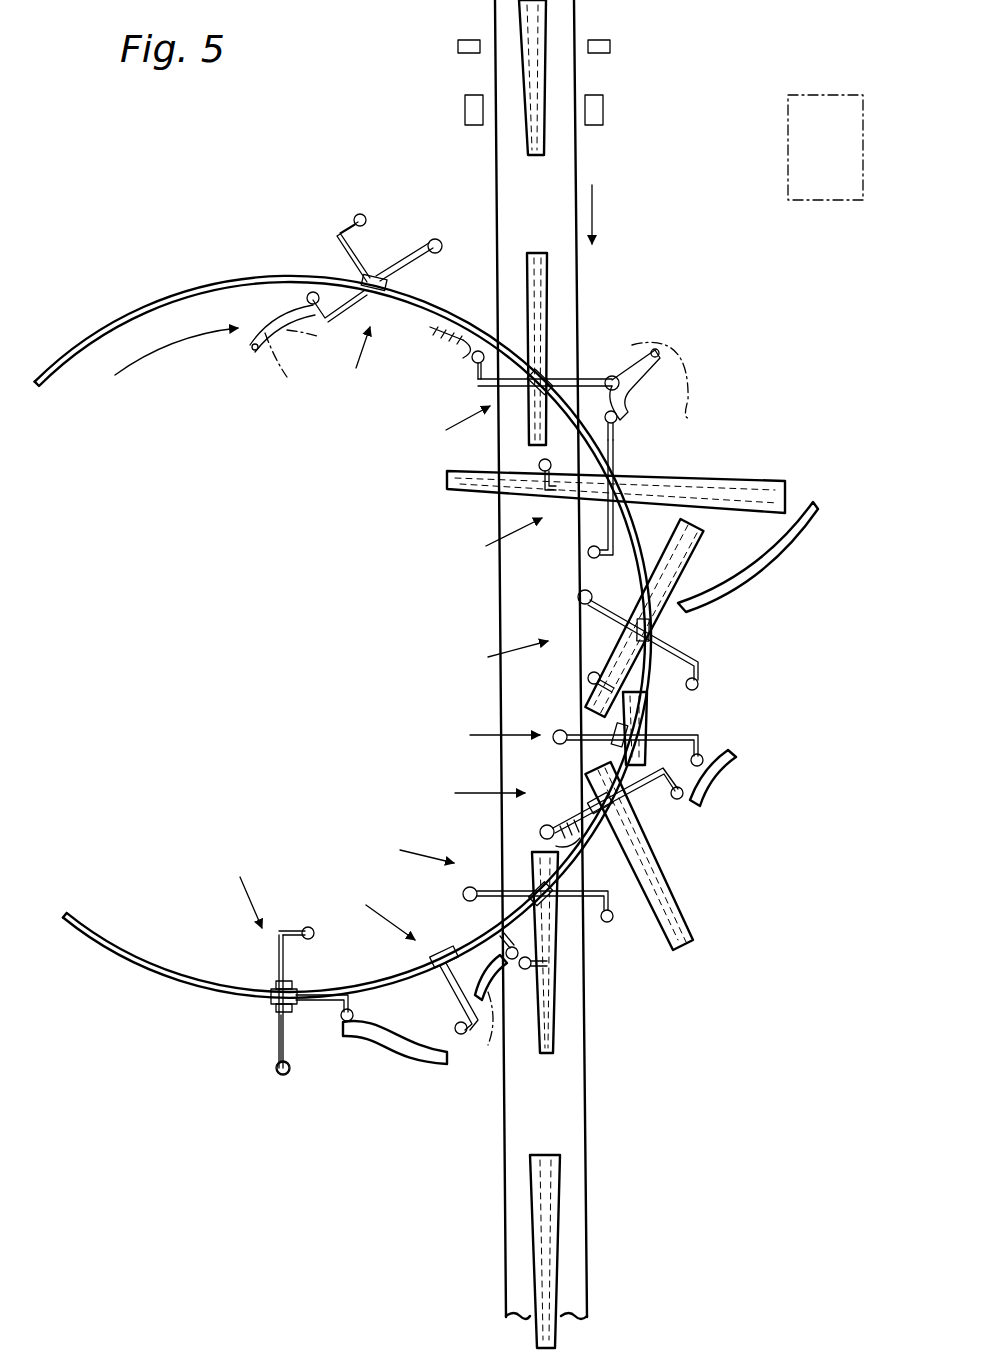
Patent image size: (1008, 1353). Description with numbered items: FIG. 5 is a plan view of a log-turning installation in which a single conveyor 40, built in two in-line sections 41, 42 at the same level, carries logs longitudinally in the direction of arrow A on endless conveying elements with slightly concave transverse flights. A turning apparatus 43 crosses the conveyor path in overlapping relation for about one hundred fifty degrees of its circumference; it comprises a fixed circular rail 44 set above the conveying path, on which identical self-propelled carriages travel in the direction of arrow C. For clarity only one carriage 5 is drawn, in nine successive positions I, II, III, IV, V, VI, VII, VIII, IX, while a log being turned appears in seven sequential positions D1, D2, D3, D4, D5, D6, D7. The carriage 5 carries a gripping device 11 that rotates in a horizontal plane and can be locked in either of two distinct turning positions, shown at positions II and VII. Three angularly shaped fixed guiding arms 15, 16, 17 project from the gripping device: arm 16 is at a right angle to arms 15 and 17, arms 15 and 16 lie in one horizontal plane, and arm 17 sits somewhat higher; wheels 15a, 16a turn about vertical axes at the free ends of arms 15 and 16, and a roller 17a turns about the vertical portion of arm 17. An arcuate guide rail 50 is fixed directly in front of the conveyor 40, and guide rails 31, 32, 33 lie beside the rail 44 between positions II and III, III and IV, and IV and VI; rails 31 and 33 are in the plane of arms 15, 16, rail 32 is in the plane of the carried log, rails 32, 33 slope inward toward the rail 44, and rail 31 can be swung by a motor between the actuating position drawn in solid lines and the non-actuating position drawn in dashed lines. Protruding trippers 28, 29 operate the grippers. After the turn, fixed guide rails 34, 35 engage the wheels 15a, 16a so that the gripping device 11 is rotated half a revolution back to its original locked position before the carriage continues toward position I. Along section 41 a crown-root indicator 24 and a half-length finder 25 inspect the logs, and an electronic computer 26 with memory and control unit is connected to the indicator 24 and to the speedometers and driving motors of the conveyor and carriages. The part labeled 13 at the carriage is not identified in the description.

The carriage 5 is at (381, 274).
The gripping device 11 is at (528, 400).
The slider block 13 is at (366, 282).
The guiding arm 15 is at (279, 964).
The wheel 15a is at (314, 938).
The guiding arm 16 is at (333, 1006).
The wheel 16a is at (356, 1018).
The guiding arm 17 is at (278, 1045).
The roller 17a is at (279, 1074).
The crown-root indicator 24 is at (456, 47).
The half-length finder 25 is at (470, 108).
The electronic computer 26 is at (788, 156).
The tripper 28 is at (462, 352).
The tripper 29 is at (558, 852).
The guide rail 31 is at (647, 372).
The guide rail 32 is at (727, 556).
The guide rail 33 is at (718, 776).
The guide rail 34 is at (482, 1012).
The guide rail 35 is at (405, 1060).
The conveyor 40 is at (483, 177).
The conveyor section 41 is at (588, 272).
The conveyor section 42 is at (590, 1250).
The turning apparatus 43 is at (314, 622).
The circular rail 44 is at (93, 936).
The arcuate guide rail 50 is at (286, 348).
The conveying direction arrow A is at (604, 214).
The carriage movement arrow C is at (176, 356).
The log position D1 is at (548, 290).
The log position D2 is at (722, 486).
The log position D3 is at (660, 621).
The log position D4 is at (652, 720).
The log position D5 is at (660, 897).
The log position D6 is at (548, 1008).
The log position D7 is at (548, 1196).
The carriage position I is at (334, 375).
The carriage position II is at (412, 417).
The carriage position III is at (484, 568).
The carriage position IV is at (486, 671).
The carriage position V is at (437, 715).
The carriage position VI is at (458, 806).
The carriage position VII is at (405, 856).
The carriage position VIII is at (378, 906).
The carriage position IX is at (240, 866).